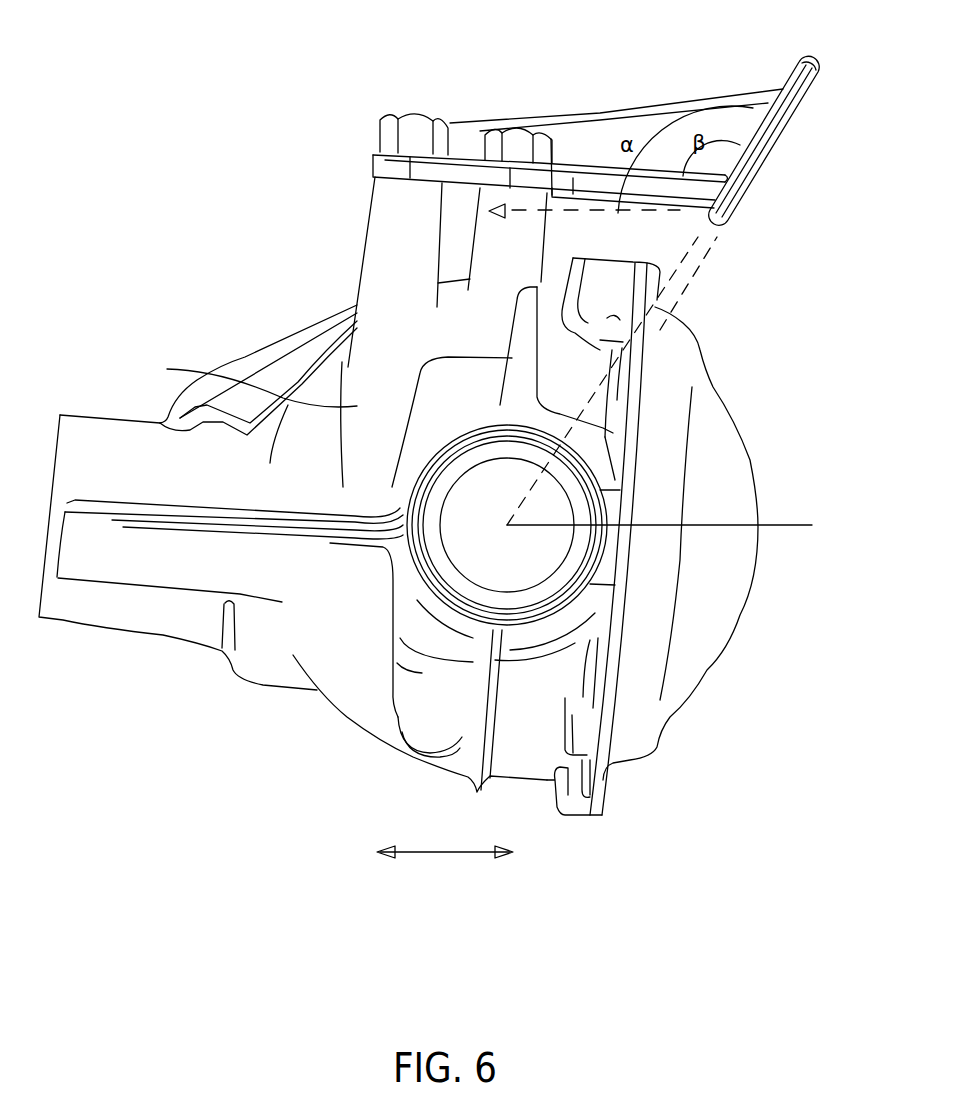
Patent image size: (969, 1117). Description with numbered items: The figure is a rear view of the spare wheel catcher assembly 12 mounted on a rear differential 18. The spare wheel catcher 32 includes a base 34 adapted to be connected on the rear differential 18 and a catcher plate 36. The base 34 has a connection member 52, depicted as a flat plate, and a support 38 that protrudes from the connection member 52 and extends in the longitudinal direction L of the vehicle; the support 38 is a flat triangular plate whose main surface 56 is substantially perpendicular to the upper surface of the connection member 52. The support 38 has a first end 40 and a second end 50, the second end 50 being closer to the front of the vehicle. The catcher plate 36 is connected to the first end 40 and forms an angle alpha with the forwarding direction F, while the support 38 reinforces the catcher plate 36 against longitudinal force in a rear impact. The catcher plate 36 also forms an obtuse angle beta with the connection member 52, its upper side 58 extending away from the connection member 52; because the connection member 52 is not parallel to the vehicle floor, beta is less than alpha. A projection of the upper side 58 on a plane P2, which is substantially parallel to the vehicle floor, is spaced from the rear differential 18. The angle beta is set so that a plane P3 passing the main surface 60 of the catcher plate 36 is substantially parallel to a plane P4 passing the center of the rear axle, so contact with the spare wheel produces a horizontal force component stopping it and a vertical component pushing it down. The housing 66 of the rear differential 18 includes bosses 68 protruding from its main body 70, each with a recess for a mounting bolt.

The spare wheel catcher assembly 12 is at (322, 101).
The rear differential 18 is at (770, 499).
The spare wheel catcher 32 is at (656, 91).
The base 34 is at (652, 204).
The catcher plate 36 is at (761, 174).
The support 38 is at (742, 94).
The first end 40 is at (743, 134).
The second end 50 is at (465, 143).
The connection member 52 is at (373, 163).
The main surface 56 is at (575, 142).
The upper side 58 is at (810, 60).
The main surface 60 is at (776, 140).
The housing 66 is at (249, 349).
The boss 68 is at (378, 255).
The main body 70 is at (248, 392).
The forwarding direction F is at (584, 228).
The longitudinal direction L is at (445, 842).
The plane P2 is at (795, 525).
The plane P3 is at (700, 268).
The plane P4 is at (598, 390).